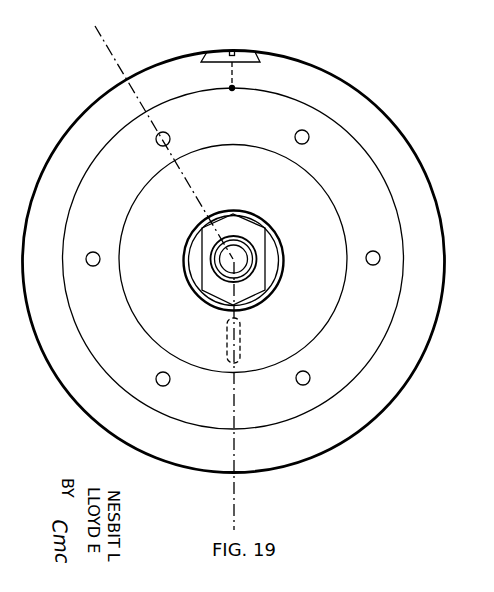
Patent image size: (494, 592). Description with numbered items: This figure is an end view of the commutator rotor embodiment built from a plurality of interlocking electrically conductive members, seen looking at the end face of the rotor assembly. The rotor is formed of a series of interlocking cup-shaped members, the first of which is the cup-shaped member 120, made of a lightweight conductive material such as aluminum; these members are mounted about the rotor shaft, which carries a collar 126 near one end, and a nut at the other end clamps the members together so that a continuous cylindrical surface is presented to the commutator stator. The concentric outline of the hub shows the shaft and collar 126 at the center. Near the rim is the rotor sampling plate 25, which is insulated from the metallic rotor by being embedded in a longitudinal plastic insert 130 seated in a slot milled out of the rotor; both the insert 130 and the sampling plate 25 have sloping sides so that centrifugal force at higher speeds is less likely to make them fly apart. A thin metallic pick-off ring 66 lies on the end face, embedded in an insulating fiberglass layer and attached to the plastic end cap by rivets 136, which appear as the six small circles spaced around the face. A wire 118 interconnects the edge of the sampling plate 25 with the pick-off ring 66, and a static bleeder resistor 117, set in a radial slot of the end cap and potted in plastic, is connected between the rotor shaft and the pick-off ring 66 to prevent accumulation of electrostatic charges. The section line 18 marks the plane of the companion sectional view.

The section line 18 is at (106, 41).
The rotor sampling plate 25 is at (232, 51).
The pick-off ring 66 is at (344, 162).
The resistor 117 is at (241, 338).
The wire 118 is at (235, 72).
The cup-shaped member 120 is at (238, 257).
The collar 126 is at (242, 232).
The plastic insert 130 is at (248, 53).
The rivets 136 is at (297, 132).